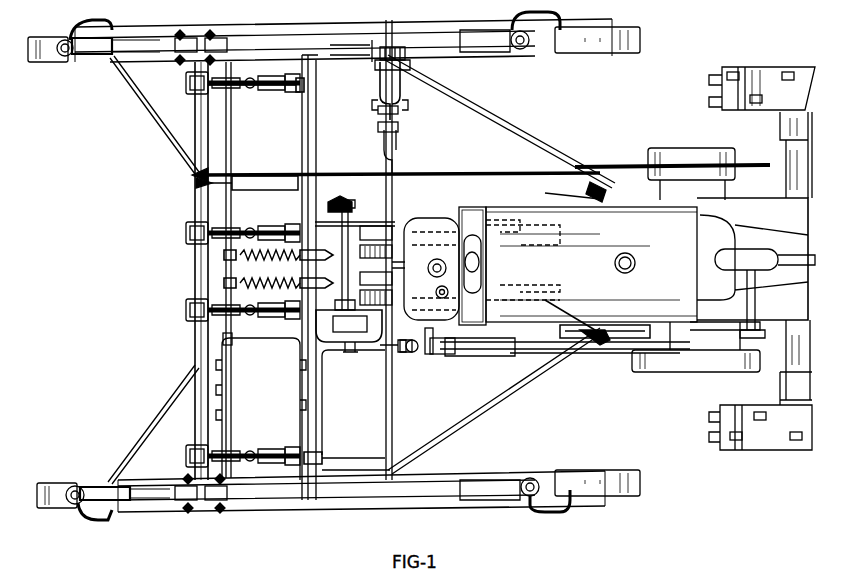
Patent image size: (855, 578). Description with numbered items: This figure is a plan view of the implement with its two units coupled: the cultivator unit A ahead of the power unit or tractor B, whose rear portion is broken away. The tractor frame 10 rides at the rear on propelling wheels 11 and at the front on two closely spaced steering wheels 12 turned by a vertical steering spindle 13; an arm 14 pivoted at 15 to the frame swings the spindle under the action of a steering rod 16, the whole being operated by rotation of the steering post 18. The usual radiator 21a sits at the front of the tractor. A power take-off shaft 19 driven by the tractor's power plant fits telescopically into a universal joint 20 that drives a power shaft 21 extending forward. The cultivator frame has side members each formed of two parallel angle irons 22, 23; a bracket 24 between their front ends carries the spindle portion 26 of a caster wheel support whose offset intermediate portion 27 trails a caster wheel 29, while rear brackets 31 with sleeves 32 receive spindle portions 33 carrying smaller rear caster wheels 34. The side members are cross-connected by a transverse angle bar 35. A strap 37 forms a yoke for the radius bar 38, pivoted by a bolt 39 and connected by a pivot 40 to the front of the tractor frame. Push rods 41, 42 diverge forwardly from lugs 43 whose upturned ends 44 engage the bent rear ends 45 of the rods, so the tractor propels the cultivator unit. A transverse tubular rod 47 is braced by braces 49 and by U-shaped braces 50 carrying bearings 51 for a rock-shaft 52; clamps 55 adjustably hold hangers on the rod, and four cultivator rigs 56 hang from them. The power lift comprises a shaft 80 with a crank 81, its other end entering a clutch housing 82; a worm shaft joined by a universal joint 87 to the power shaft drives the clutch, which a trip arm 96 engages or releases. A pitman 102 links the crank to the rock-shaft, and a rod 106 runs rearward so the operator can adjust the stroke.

The tractor frame 10 is at (428, 230).
The propelling wheels 11 is at (720, 90).
The steering wheels 12 is at (400, 230).
The vertical steering spindle 13 is at (455, 215).
The arm 14 is at (430, 356).
The pivot 15 is at (462, 356).
The steering rod 16 is at (592, 345).
The steering post 18 is at (790, 255).
The power take-off shaft 19 is at (640, 318).
The universal joint 20 is at (582, 325).
The power shaft 21 is at (510, 356).
The radiator 21a is at (476, 218).
The angle iron 22 is at (450, 43).
The angle iron 23 is at (466, 52).
The bracket 24 is at (98, 54).
The spindle portion 26 is at (64, 56).
The intermediate portion 27 is at (96, 520).
The caster wheel 29 is at (42, 62).
The bracket 31 is at (498, 52).
The sleeve 32 is at (548, 50).
The spindle portion 33 is at (522, 50).
The rear caster wheel 34 is at (640, 36).
The transverse angle bar 35 is at (316, 392).
The strap 37 is at (400, 116).
The radius bar 38 is at (398, 150).
The bolt 39 is at (378, 126).
The pivot 40 is at (400, 270).
The push rod 41 is at (505, 123).
The push rod 42 is at (490, 392).
The lug 43 is at (560, 197).
The upturned end 44 is at (603, 188).
The bent rear end 45 is at (590, 220).
The tubular rod 47 is at (195, 282).
The brace 49 is at (140, 105).
The U-shaped brace 50 is at (298, 176).
The bearing 51 is at (232, 340).
The rock-shaft 52 is at (231, 412).
The clamp 55 is at (190, 228).
The cultivator rig 56 is at (318, 86).
The shaft 80 is at (340, 342).
The crank 81 is at (352, 190).
The clutch housing 82 is at (360, 342).
The universal joint 87 is at (412, 352).
The trip arm 96 is at (386, 400).
The pitman 102 is at (335, 176).
The rod 106 is at (598, 170).
The cultivator unit A is at (195, 262).
The power unit B is at (773, 64).